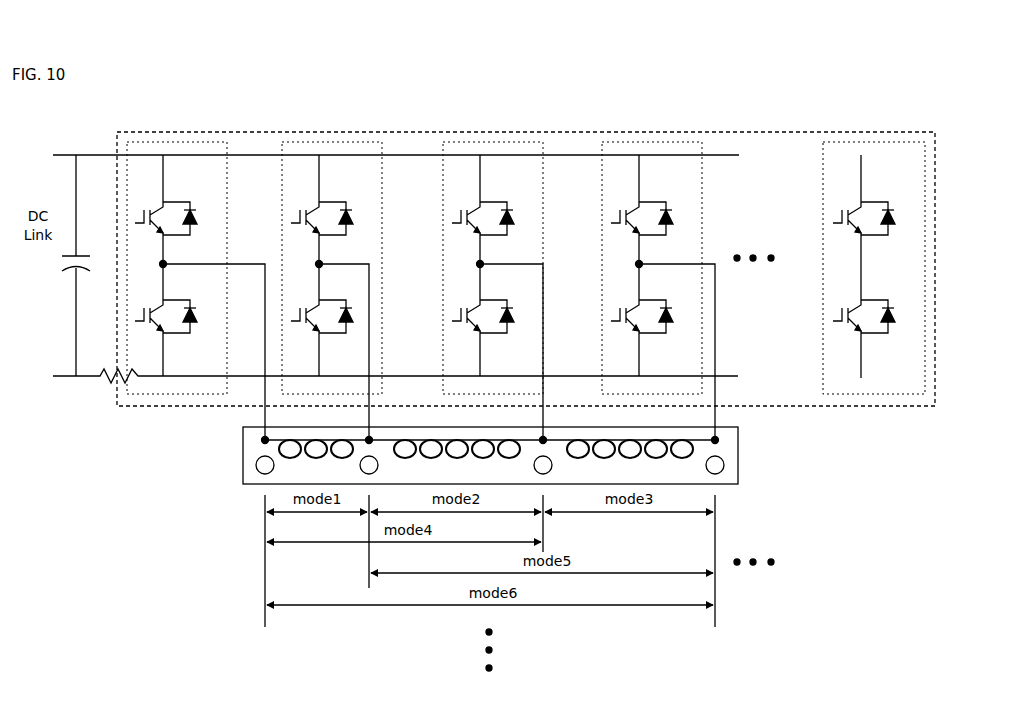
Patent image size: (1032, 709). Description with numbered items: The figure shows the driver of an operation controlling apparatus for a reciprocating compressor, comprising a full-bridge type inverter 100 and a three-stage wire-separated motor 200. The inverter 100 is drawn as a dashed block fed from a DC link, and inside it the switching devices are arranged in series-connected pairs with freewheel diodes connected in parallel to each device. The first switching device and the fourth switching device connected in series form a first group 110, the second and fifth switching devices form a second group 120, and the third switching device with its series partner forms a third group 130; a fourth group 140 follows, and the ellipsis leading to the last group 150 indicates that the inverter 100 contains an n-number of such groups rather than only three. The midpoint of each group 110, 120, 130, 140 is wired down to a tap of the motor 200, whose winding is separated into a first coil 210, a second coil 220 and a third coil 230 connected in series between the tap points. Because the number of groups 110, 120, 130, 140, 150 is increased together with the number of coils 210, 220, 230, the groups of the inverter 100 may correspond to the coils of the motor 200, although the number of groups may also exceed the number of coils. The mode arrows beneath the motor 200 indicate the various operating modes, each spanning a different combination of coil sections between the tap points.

The full-bridge type inverter 100 is at (915, 132).
The first group 110 is at (177, 142).
The second group 120 is at (332, 142).
The third group 130 is at (493, 142).
The fourth group 140 is at (653, 142).
The n-th group 150 is at (875, 142).
The three-stage wire-separated motor 200 is at (490, 445).
The first coil 210 is at (300, 440).
The second coil 220 is at (400, 440).
The third coil 230 is at (678, 440).